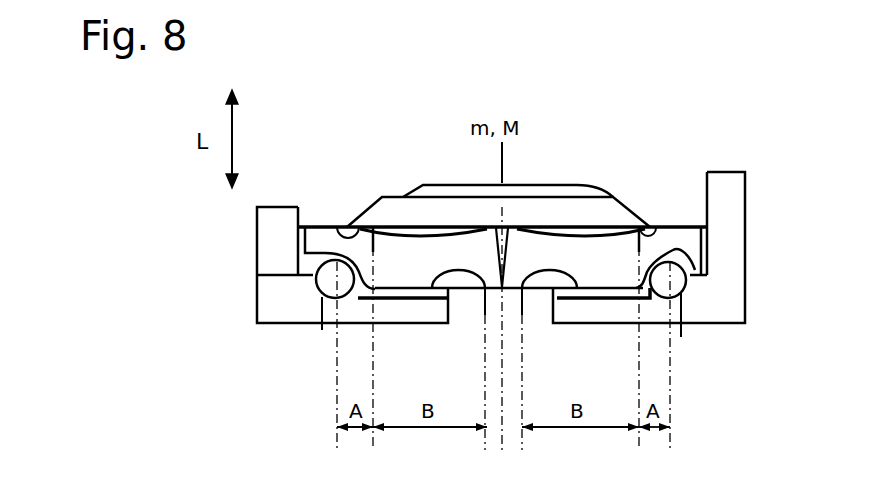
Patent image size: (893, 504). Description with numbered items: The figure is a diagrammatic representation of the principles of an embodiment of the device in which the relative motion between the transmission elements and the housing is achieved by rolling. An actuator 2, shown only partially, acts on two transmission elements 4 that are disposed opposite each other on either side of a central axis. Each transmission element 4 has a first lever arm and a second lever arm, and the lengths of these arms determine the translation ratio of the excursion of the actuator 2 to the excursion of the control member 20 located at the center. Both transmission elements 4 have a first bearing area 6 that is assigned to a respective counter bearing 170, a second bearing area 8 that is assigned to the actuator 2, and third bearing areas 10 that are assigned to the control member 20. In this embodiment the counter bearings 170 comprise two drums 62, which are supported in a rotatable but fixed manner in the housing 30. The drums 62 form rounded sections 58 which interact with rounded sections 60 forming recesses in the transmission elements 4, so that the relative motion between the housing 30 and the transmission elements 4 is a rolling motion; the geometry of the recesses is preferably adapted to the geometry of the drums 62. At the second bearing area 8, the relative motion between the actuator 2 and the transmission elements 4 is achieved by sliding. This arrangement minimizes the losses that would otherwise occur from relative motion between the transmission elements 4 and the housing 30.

The actuator 2 is at (583, 213).
The transmission elements 4 is at (457, 243).
The first bearing area 6 is at (332, 255).
The rounded sections 60 is at (498, 256).
The second bearing area 8 is at (345, 226).
The third bearing areas 10 is at (432, 288).
The control member 20 is at (462, 333).
The housing 30 is at (267, 308).
The rounded sections 58 is at (318, 278).
The drums 62 is at (322, 330).
The counter bearing 170 is at (308, 292).